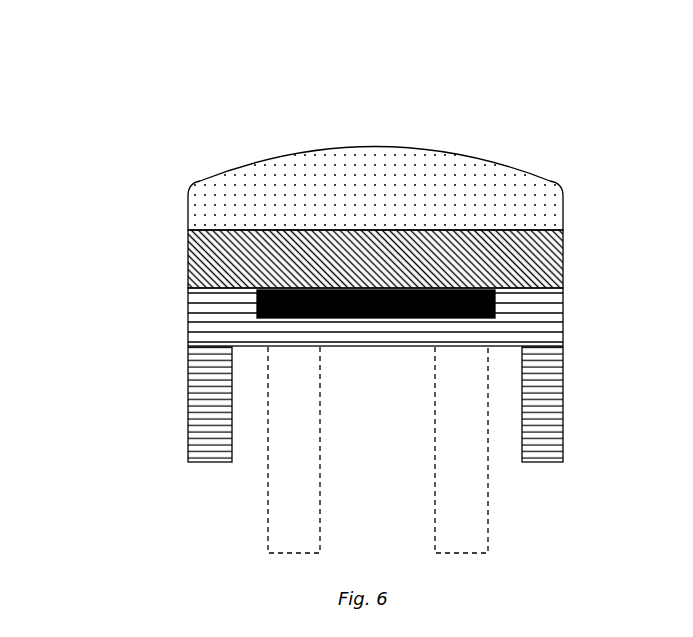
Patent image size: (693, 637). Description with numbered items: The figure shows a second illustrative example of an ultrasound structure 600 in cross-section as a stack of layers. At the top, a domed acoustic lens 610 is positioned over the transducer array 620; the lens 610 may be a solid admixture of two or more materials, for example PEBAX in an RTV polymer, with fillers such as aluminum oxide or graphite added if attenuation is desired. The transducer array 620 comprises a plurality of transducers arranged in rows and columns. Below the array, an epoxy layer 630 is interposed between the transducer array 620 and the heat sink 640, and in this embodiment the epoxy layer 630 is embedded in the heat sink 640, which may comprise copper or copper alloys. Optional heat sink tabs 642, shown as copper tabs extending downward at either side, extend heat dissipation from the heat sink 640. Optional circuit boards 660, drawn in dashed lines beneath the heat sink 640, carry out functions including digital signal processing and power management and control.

The ultrasound structure 600 is at (67, 105).
The acoustic lens 610 is at (563, 218).
The transducer array 620 is at (563, 268).
The epoxy layer 630 is at (495, 303).
The heat sink 640 is at (565, 340).
The heat sink tabs 642 is at (188, 402).
The circuit board 660 is at (435, 415).